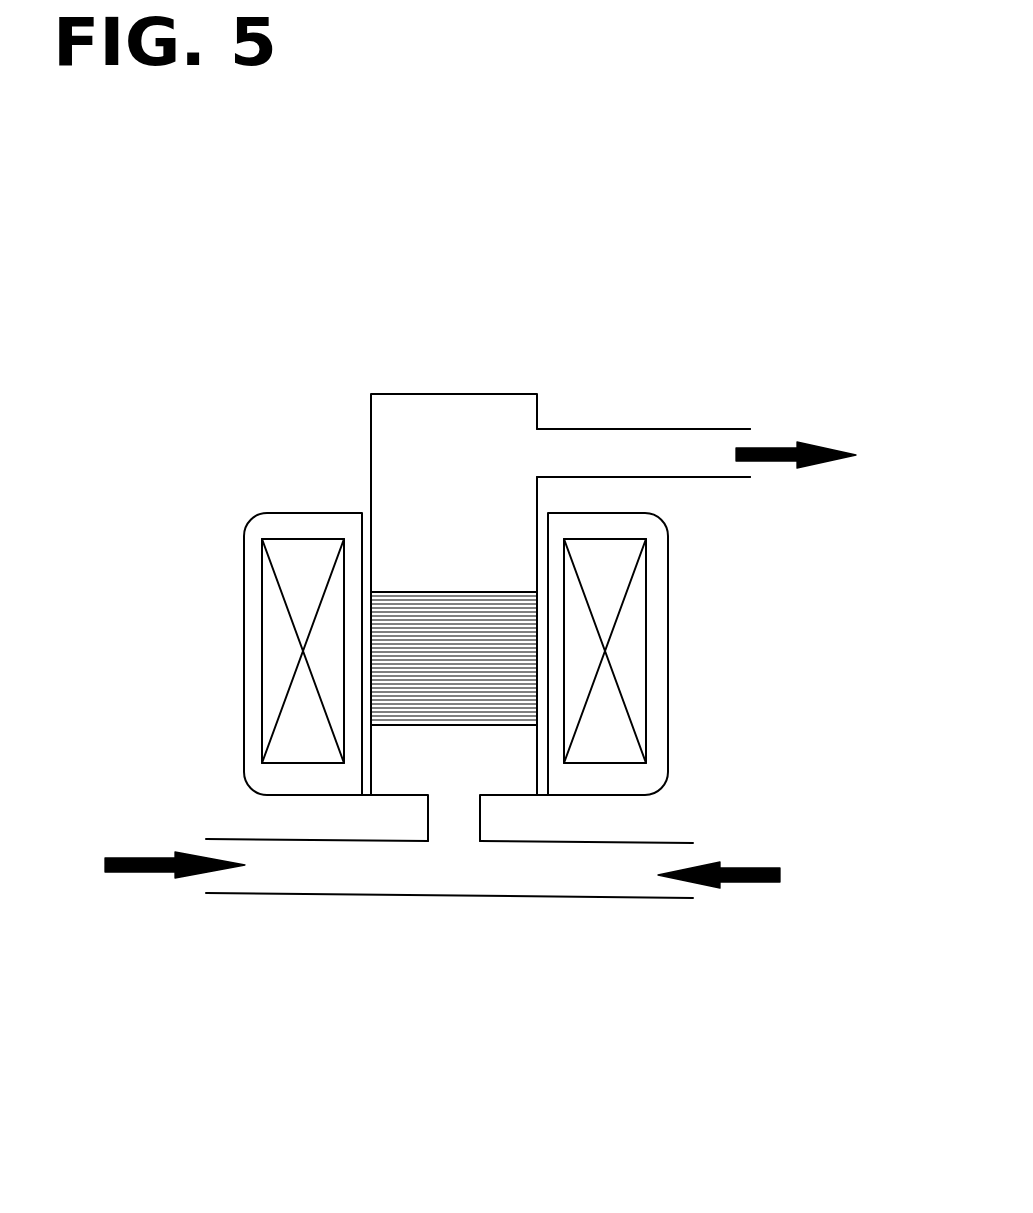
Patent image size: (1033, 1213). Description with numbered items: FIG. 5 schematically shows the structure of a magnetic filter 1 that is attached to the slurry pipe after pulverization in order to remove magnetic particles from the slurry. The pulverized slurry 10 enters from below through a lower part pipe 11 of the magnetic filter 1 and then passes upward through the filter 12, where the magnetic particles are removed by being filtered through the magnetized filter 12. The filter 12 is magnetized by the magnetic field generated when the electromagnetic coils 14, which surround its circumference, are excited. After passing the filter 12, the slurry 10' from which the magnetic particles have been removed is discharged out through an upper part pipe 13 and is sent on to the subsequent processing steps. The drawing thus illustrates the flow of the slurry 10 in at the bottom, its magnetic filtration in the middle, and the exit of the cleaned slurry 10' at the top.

The magnetic filter 1 is at (465, 310).
The slurry 10 is at (448, 875).
The slurry 10' is at (824, 456).
The lower part pipe 11 is at (447, 886).
The filter 12 is at (402, 593).
The upper part pipe 13 is at (280, 633).
The electromagnetic coils 14 is at (617, 447).